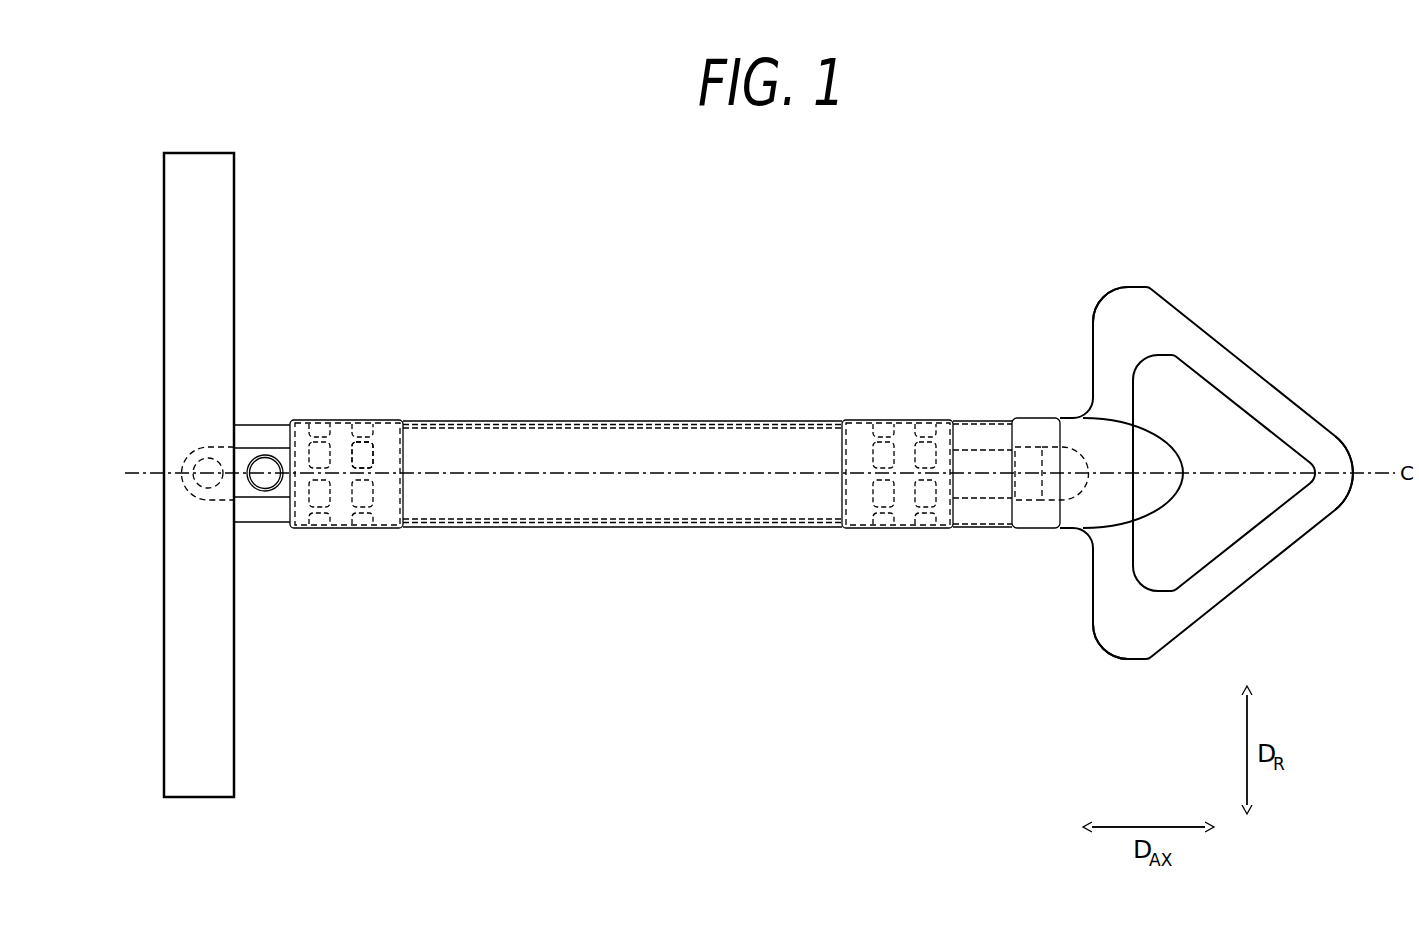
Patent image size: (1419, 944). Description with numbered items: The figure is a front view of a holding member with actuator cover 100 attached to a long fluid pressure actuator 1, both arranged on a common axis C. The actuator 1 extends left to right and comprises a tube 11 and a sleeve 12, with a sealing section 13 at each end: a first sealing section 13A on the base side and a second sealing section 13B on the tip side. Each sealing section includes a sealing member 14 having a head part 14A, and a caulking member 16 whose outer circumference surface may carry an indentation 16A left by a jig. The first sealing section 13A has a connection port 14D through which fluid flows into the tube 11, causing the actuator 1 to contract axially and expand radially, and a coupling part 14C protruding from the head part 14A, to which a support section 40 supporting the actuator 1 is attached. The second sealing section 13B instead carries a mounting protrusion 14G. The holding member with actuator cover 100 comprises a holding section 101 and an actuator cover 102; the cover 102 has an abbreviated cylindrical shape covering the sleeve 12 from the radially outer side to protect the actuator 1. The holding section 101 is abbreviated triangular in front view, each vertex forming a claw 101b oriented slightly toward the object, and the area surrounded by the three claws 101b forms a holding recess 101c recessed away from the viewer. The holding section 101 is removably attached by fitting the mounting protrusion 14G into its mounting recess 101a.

The fluid pressure actuator 1 is at (839, 507).
The tube 11 is at (577, 440).
The sleeve 12 is at (677, 421).
The sealing section 13 is at (621, 494).
The first sealing section 13A is at (373, 480).
The second sealing section 13B is at (910, 539).
The sealing member 14 is at (608, 483).
The head part 14A is at (255, 435).
The coupling part 14C is at (195, 500).
The connection port 14D is at (258, 490).
The mounting protrusion 14G is at (1048, 503).
The caulking member 16 is at (344, 420).
The indentation 16A is at (363, 455).
The support section 40 is at (200, 637).
The holding member with actuator cover 100 is at (885, 471).
The holding section 101 is at (1190, 471).
The mounting recess 101a is at (1084, 450).
The claw 101b is at (1118, 303).
The holding recess 101c is at (1227, 440).
The actuator cover 102 is at (707, 479).